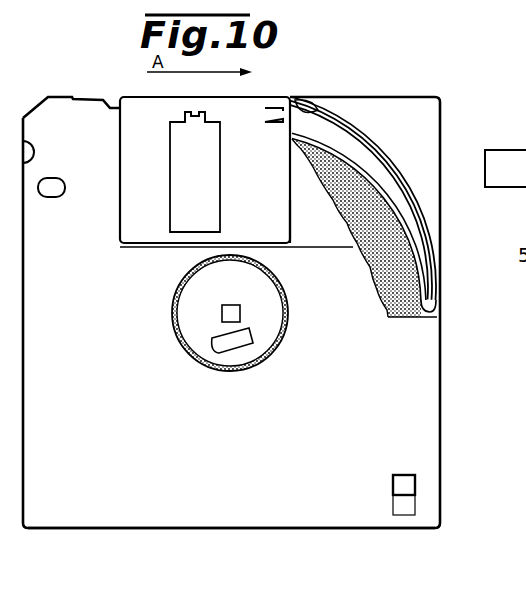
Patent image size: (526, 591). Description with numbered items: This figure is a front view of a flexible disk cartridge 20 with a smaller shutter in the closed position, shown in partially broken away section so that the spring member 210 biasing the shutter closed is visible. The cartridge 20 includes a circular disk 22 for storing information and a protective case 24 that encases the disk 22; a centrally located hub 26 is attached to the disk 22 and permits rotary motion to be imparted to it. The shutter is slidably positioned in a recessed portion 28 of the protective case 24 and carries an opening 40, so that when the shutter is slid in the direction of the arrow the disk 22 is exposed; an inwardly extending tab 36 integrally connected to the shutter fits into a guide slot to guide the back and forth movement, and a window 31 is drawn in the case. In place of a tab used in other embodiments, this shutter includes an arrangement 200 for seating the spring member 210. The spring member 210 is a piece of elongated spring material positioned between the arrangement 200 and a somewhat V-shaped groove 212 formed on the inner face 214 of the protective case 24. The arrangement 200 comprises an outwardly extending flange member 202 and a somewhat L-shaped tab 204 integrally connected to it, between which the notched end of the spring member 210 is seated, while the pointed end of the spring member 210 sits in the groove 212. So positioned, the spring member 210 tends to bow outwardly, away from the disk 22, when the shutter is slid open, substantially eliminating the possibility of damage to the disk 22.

The flexible disk cartridge 20 is at (447, 366).
The circular disk 22 is at (286, 326).
The protective case 24 is at (357, 507).
The hub 26 is at (263, 340).
The recessed portion 28 is at (323, 233).
The shutter window 31 is at (122, 160).
The inwardly extending tab 36 is at (193, 111).
The opening 40 is at (172, 203).
The arrangement for seating a spring member 200 is at (296, 95).
The flange member 202 is at (304, 101).
The L-shaped tab 204 is at (318, 108).
The spring member 210 is at (378, 145).
The V-shaped groove 212 is at (438, 298).
The inner face 214 is at (422, 140).